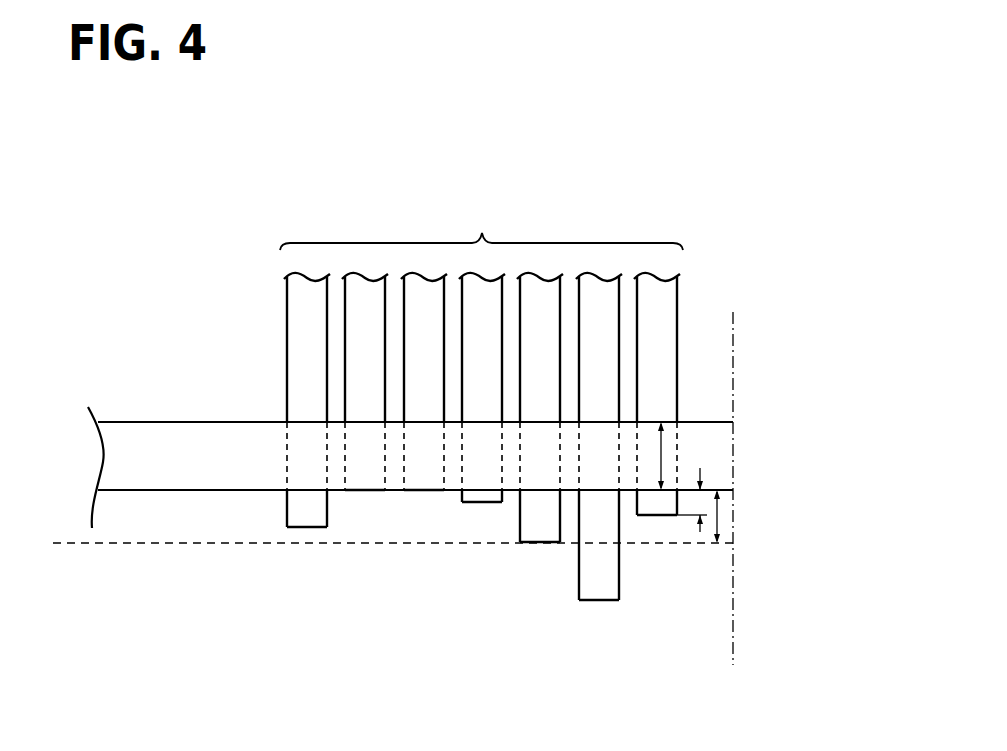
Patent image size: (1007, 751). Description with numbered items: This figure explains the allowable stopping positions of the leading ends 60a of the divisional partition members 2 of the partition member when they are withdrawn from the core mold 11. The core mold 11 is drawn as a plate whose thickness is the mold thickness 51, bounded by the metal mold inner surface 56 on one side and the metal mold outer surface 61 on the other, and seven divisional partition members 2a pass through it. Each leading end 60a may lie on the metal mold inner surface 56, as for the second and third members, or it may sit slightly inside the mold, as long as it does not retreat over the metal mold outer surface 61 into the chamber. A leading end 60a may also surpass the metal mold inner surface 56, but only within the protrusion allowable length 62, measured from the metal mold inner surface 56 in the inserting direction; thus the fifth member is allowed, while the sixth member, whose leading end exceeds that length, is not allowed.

The divisional partition member 2 is at (483, 448).
The divisional partition member 2a is at (483, 485).
The leading end 60a is at (483, 568).
The core mold 11 is at (372, 472).
The metal mold outer surface 61 is at (150, 421).
The metal mold inner surface 56 is at (127, 490).
The mold thickness 51 is at (663, 455).
The protrusion allowable length 62 is at (718, 512).